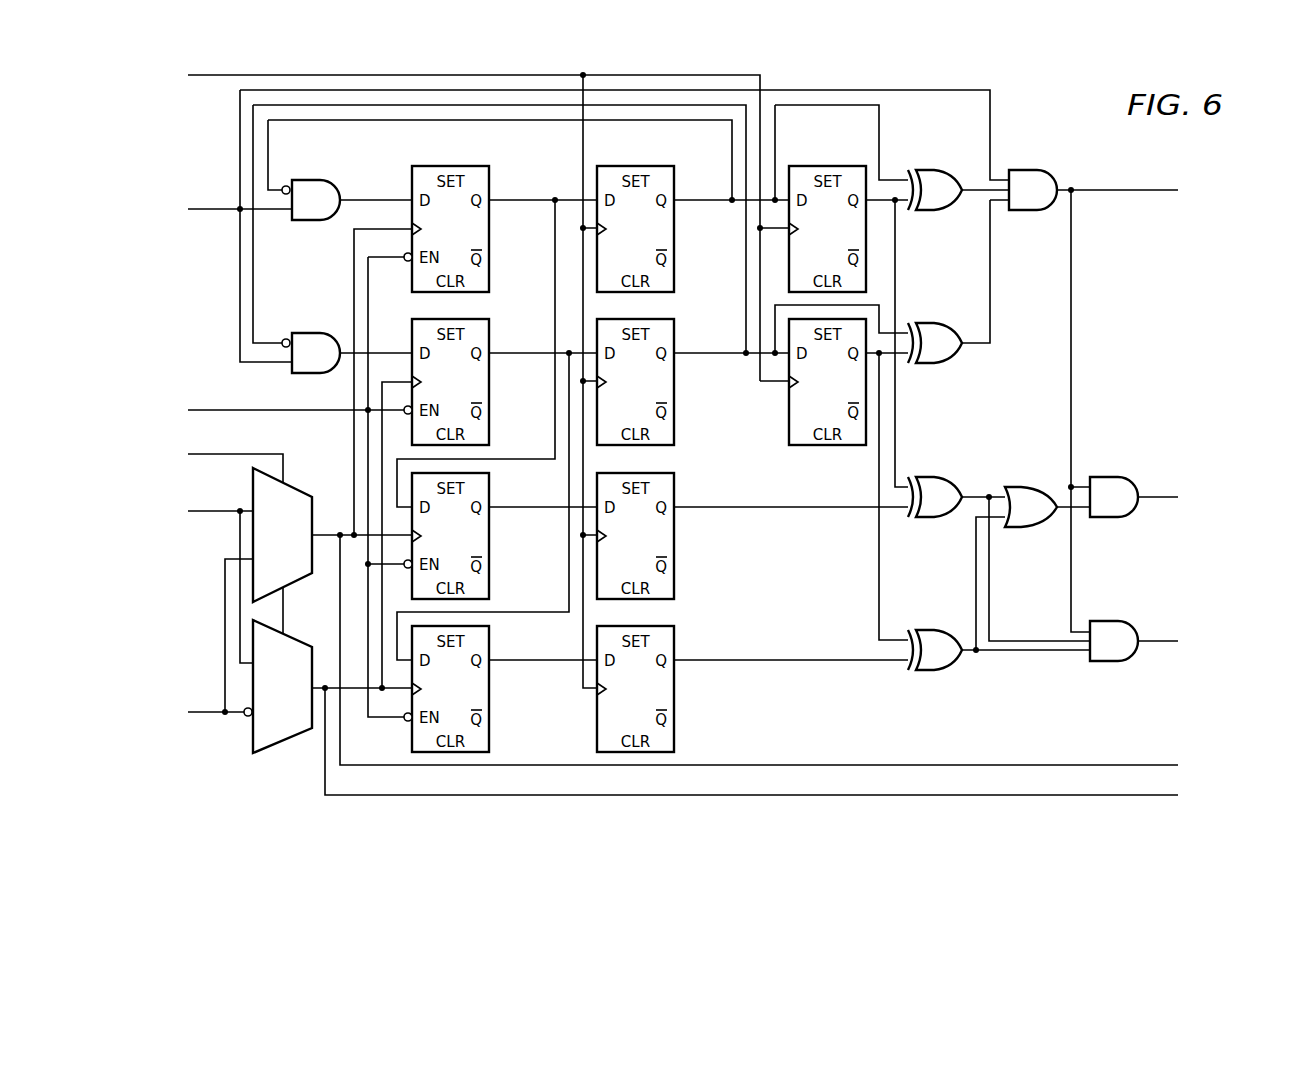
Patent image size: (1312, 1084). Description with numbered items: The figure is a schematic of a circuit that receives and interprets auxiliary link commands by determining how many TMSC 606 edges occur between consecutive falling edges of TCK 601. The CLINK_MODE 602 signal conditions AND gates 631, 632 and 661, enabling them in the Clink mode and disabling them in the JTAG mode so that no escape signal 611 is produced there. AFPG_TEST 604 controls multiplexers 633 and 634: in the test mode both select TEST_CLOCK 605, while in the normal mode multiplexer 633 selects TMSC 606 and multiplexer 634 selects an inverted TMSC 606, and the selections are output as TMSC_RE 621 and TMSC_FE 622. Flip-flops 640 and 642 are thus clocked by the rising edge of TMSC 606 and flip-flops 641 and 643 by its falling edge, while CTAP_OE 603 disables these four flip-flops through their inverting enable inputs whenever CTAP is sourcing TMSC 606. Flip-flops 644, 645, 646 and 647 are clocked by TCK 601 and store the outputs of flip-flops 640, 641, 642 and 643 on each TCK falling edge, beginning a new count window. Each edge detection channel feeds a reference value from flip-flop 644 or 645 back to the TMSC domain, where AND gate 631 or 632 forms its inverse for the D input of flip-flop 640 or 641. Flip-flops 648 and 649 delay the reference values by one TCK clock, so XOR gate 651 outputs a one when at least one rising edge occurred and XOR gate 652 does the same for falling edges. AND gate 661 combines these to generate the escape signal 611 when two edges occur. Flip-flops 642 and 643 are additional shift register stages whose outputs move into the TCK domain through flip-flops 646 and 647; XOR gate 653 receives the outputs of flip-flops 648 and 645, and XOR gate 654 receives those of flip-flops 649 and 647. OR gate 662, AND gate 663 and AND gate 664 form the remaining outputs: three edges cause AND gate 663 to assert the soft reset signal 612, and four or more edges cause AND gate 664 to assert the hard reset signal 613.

The TCK 601 is at (198, 78).
The CLINK_MODE 602 is at (206, 209).
The CTAP_OE 603 is at (210, 409).
The AFPG_TEST 604 is at (212, 458).
The TEST_CLOCK 605 is at (212, 515).
The TMSC 606 is at (208, 716).
The escape signal 611 is at (1133, 192).
The soft reset signal 612 is at (1158, 499).
The hard reset signal 613 is at (1158, 643).
The TMSC_RE 621 is at (1143, 763).
The TMSC_FE 622 is at (1143, 797).
The AND gate 631 is at (309, 180).
The AND gate 632 is at (309, 333).
The multiplexer 633 is at (303, 492).
The multiplexer 634 is at (288, 742).
The flip-flop 640 is at (489, 241).
The flip-flop 641 is at (489, 394).
The flip-flop 642 is at (489, 547).
The flip-flop 643 is at (489, 701).
The flip-flop 644 is at (675, 242).
The flip-flop 645 is at (675, 394).
The flip-flop 646 is at (675, 547).
The flip-flop 647 is at (675, 701).
The flip-flop 648 is at (830, 165).
The flip-flop 649 is at (835, 446).
The XOR gate 651 is at (945, 171).
The XOR gate 652 is at (945, 364).
The XOR gate 653 is at (945, 478).
The XOR gate 654 is at (945, 671).
The AND gate 661 is at (1036, 170).
The OR gate 662 is at (1036, 487).
The AND gate 663 is at (1115, 477).
The AND gate 664 is at (1115, 621).